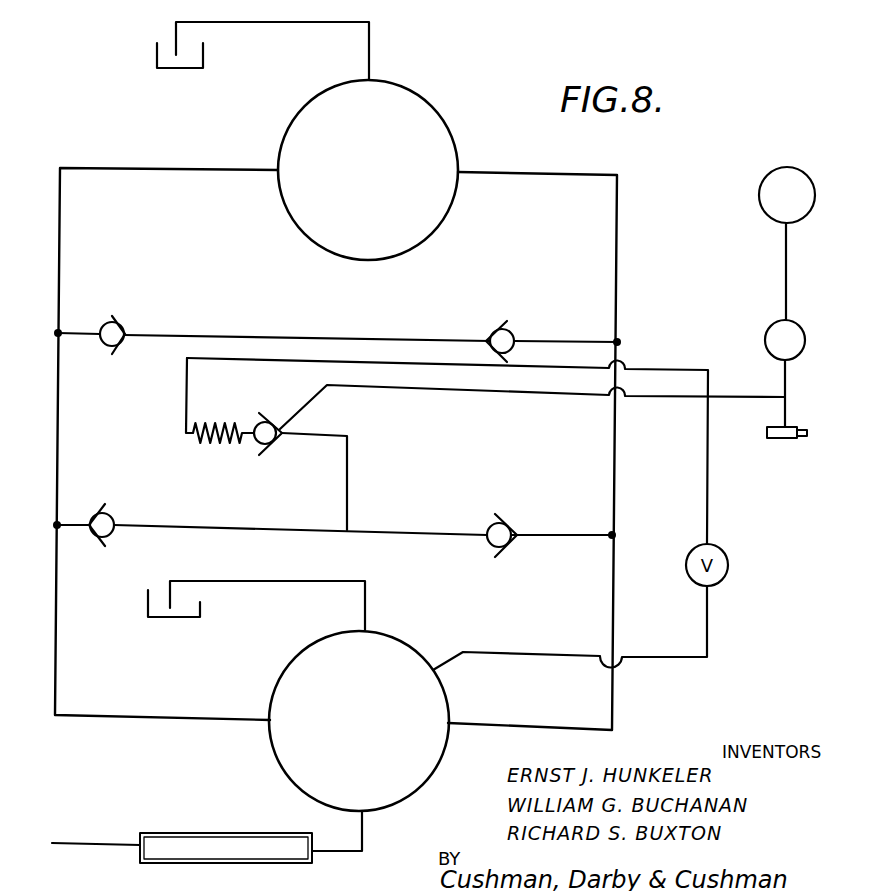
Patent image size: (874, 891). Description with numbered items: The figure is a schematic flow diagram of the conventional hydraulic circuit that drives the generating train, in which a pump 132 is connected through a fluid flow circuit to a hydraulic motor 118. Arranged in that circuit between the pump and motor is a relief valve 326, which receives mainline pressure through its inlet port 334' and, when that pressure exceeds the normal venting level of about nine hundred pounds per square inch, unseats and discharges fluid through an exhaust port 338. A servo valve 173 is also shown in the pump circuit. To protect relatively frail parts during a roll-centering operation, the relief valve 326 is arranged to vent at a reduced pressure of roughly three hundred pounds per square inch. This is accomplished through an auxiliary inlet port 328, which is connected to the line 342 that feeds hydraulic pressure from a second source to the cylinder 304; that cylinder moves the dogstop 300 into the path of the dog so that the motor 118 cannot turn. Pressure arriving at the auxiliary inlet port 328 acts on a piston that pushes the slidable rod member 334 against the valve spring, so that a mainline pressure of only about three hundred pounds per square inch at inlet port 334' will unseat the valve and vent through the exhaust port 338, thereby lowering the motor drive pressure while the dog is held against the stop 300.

The hydraulic motor 118 is at (428, 121).
The pump 132 is at (290, 758).
The servo valve 173 is at (172, 825).
The stop 300 is at (805, 440).
The cylinder 304 is at (775, 440).
The relief valve 326 is at (248, 455).
The auxiliary inlet port 328 is at (300, 411).
The slidable rod member 334 is at (792, 243).
The inlet port 334' is at (313, 481).
The exhaust port 338 is at (190, 430).
The line 342 is at (789, 383).